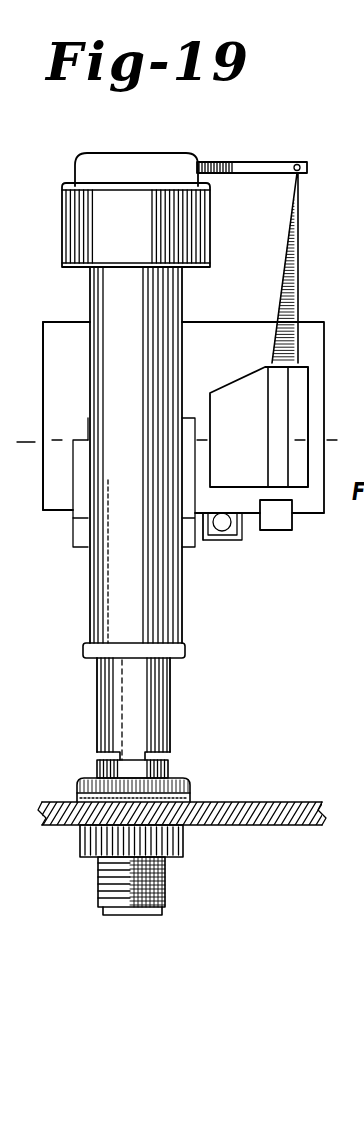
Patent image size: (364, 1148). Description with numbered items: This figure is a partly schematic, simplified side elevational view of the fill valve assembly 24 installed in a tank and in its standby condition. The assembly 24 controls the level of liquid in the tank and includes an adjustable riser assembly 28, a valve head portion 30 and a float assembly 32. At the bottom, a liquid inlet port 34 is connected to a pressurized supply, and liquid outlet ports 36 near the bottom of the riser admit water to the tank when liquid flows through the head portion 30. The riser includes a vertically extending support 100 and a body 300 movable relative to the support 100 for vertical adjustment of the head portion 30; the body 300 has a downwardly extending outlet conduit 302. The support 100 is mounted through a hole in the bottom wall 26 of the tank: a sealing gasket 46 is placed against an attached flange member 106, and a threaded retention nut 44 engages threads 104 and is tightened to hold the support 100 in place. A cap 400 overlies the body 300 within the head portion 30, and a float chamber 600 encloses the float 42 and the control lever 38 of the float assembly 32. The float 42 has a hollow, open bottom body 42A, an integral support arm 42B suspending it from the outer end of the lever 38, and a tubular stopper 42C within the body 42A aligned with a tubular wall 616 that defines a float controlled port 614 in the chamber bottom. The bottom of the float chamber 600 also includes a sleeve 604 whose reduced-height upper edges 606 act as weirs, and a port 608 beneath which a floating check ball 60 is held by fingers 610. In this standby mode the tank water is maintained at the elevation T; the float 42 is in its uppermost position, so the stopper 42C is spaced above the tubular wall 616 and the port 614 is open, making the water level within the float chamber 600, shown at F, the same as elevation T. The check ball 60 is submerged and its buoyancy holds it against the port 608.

The fill valve assembly 24 is at (203, 127).
The valve head portion 30 is at (101, 139).
The control lever 38 is at (235, 166).
The cap 400 is at (211, 239).
The support arm 42B is at (300, 247).
The float assembly 32 is at (308, 309).
The float chamber 600 is at (42, 344).
The upper edges 606 is at (73, 440).
The sleeve 604 is at (73, 517).
The float 42 is at (231, 378).
The hollow, open bottom body 42A is at (308, 389).
The tubular stopper 42C is at (267, 442).
The water level within the float chamber F is at (300, 440).
The tank water level T is at (39, 423).
The port 608 is at (222, 512).
The floating check ball 60 is at (224, 531).
The fingers 610 is at (212, 541).
The float controlled port 614 is at (280, 531).
The tubular wall 616 is at (293, 520).
The body 300 is at (184, 603).
The outlet conduit 302 is at (184, 636).
The support 100 is at (94, 721).
The adjustable riser assembly 28 is at (251, 704).
The liquid outlet ports 36 is at (168, 752).
The flange member 106 is at (97, 780).
The sealing gasket 46 is at (191, 800).
The bottom wall 26 is at (243, 826).
The threaded retention nut 44 is at (178, 843).
The threads 104 is at (98, 885).
The liquid inlet port 34 is at (161, 918).